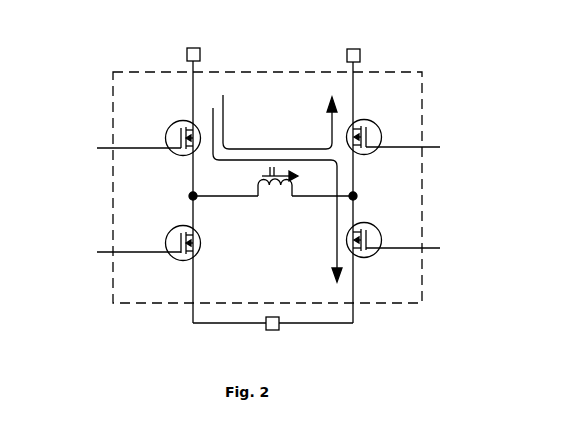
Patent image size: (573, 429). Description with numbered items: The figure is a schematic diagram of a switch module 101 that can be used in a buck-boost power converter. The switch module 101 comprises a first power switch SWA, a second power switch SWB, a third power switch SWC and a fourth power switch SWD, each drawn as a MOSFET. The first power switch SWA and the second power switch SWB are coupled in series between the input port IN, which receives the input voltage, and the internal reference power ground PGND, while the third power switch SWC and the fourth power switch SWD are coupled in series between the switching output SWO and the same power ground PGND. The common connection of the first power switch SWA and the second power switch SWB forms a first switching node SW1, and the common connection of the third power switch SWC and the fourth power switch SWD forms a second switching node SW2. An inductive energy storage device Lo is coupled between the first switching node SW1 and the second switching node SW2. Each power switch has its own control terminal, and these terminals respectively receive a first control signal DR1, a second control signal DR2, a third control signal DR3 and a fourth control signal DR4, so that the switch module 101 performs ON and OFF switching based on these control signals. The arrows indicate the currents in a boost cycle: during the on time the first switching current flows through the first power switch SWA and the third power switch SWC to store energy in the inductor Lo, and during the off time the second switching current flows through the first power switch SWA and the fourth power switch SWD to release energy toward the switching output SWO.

The switch module 101 is at (125, 72).
The first power switch SWA is at (166, 128).
The second power switch SWB is at (169, 256).
The third power switch SWC is at (371, 252).
The fourth power switch SWD is at (374, 130).
The first switching node SW1 is at (212, 187).
The second switching node SW2 is at (370, 190).
The inductive energy storage device Lo is at (275, 197).
The input port IN is at (191, 45).
The switching output SWO is at (350, 47).
The internal reference power ground PGND is at (284, 334).
The first control signal DR1 is at (130, 137).
The second control signal DR2 is at (129, 245).
The third control signal DR3 is at (414, 261).
The fourth control signal DR4 is at (411, 136).